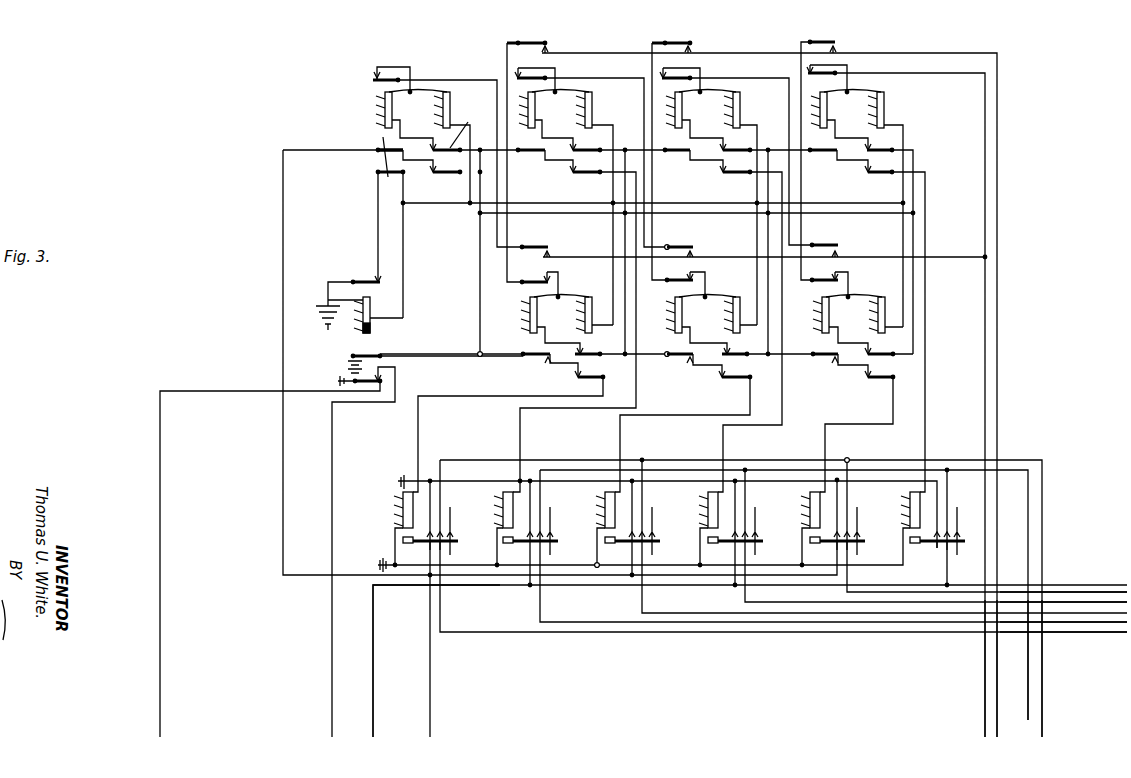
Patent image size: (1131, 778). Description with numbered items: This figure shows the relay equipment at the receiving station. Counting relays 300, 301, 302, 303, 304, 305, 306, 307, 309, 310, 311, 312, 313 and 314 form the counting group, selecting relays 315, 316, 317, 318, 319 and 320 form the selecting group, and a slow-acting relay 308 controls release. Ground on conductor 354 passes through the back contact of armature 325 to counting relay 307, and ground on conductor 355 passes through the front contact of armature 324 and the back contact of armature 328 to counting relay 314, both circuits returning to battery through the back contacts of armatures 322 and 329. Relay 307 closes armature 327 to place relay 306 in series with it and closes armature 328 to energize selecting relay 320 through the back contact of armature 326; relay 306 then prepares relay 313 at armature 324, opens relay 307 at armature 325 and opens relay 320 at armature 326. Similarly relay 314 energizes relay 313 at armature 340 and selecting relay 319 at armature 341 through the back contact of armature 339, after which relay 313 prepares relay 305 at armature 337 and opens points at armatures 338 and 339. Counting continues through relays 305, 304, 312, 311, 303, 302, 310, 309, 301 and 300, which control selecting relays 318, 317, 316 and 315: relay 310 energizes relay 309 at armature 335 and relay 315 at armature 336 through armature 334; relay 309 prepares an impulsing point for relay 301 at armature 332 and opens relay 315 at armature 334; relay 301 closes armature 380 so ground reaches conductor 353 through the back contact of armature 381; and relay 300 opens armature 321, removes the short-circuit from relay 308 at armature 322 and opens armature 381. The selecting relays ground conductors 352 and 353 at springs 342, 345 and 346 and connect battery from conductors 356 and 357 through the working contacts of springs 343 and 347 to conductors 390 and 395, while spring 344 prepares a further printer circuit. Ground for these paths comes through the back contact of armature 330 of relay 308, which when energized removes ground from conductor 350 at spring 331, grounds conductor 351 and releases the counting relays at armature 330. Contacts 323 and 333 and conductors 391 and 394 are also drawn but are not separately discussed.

The counting relay 300 is at (377, 108).
The counting relay 301 is at (440, 106).
The counting relay 302 is at (537, 105).
The counting relay 303 is at (595, 105).
The counting relay 304 is at (683, 105).
The counting relay 305 is at (744, 104).
The counting relay 306 is at (829, 100).
The counting relay 307 is at (888, 100).
The slow-acting relay 308 is at (372, 320).
The counting relay 309 is at (528, 308).
The counting relay 310 is at (537, 310).
The counting relay 311 is at (674, 308).
The counting relay 312 is at (684, 310).
The counting relay 313 is at (820, 310).
The counting relay 314 is at (830, 310).
The selecting relay 315 is at (402, 505).
The selecting relay 316 is at (502, 506).
The selecting relay 317 is at (604, 506).
The selecting relay 318 is at (707, 504).
The selecting relay 319 is at (809, 504).
The selecting relay 320 is at (909, 504).
The armature 321 is at (386, 73).
The armature 322 is at (381, 146).
The contact 323 is at (463, 127).
The armature 324 is at (833, 42).
The armature 325 is at (838, 74).
The armature 326 is at (825, 157).
The armature 327 is at (888, 147).
The armature 328 is at (878, 176).
The armature 329 is at (362, 274).
The armature 330 is at (362, 357).
The spring 331 is at (348, 382).
The armature 332 is at (528, 247).
The contact 333 is at (540, 281).
The armature 334 is at (536, 360).
The armature 335 is at (585, 354).
The armature 336 is at (587, 377).
The armature 337 is at (830, 246).
The armature 338 is at (835, 280).
The armature 339 is at (830, 358).
The armature 340 is at (879, 356).
The armature 341 is at (878, 378).
The spring 342 is at (935, 545).
The spring 343 is at (948, 548).
The spring 344 is at (836, 541).
The spring 345 is at (856, 538).
The spring 346 is at (438, 538).
The spring 347 is at (452, 541).
The conductor 350 is at (158, 728).
The conductor 351 is at (330, 728).
The conductor 352 is at (374, 728).
The conductor 353 is at (432, 728).
The conductor 354 is at (983, 704).
The conductor 355 is at (995, 724).
The conductor 356 is at (1032, 707).
The conductor 357 is at (1044, 728).
The armature 380 is at (441, 176).
The armature 381 is at (375, 157).
The conductor 390 is at (1066, 590).
The conductor 391 is at (1103, 600).
The conductor 394 is at (1095, 624).
The conductor 395 is at (1117, 632).